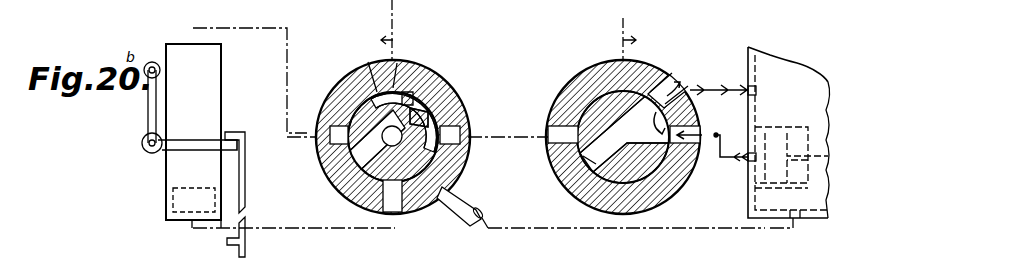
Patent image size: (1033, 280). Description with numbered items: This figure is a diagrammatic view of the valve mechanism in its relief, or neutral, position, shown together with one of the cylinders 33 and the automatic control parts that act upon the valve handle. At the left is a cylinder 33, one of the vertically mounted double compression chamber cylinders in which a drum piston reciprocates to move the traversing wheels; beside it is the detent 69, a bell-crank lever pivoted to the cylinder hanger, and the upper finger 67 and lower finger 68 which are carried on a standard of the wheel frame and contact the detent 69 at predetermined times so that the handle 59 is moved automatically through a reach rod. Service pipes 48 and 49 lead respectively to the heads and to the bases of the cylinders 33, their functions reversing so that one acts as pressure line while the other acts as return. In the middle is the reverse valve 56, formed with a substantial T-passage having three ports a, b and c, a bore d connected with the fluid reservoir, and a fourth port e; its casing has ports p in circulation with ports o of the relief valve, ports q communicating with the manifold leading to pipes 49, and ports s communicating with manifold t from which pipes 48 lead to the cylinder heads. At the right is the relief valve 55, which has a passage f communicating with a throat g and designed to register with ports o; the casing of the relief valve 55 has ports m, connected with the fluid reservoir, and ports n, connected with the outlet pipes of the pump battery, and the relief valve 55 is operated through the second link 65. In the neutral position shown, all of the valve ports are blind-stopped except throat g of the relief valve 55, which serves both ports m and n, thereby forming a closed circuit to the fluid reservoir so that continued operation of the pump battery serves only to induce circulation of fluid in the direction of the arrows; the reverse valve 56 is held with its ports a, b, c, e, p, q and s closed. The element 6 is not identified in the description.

The cylinder 33 is at (178, 95).
The detent 69 is at (207, 143).
The upper finger 67 is at (235, 131).
The lower finger 68 is at (242, 240).
The service pipe 48 is at (289, 80).
The reverse valve 56 is at (320, 118).
The service pipe 49 is at (300, 230).
The handle 59 is at (402, 2).
The relief valve 55 is at (650, 206).
The second link 65 is at (620, 32).
The valve 6 is at (645, 13).
The port a is at (375, 68).
The port b is at (418, 106).
The port c is at (462, 160).
The bore d is at (415, 90).
The fourth port e is at (350, 170).
The port p is at (460, 136).
The port q is at (394, 216).
The port s is at (323, 138).
The manifold t is at (330, 177).
The passage f is at (568, 102).
The throat g is at (650, 88).
The port m is at (686, 88).
The port n is at (706, 131).
The port o is at (548, 132).